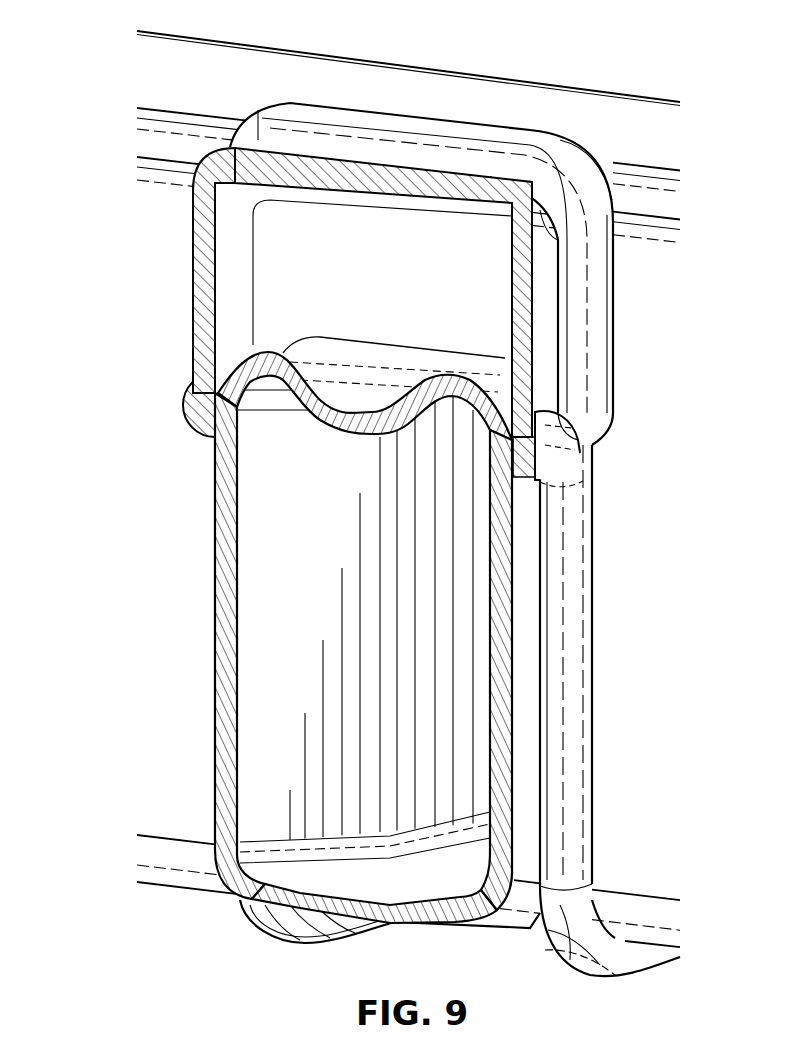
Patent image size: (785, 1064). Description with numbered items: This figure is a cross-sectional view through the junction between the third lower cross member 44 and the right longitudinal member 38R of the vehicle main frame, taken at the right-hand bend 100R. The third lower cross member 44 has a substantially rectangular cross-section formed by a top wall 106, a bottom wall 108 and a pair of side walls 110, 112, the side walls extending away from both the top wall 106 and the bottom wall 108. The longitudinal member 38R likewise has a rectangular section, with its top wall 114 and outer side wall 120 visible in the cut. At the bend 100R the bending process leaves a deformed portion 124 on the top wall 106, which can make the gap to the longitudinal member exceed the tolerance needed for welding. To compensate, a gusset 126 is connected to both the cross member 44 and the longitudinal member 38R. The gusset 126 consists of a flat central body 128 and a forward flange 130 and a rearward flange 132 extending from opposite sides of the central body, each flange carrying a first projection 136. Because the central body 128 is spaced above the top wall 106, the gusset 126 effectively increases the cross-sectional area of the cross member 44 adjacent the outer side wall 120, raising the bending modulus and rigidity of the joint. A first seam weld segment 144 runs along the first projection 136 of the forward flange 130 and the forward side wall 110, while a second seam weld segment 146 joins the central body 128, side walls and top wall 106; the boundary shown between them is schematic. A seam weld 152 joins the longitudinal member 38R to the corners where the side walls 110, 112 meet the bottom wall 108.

The longitudinal member 38R is at (473, 75).
The top wall 114 is at (608, 122).
The central body 128 is at (373, 188).
The forward flange 130 is at (550, 347).
The rearward flange 132 is at (193, 270).
The gusset 126 is at (310, 292).
The first projection 136 is at (193, 365).
The second seam weld segment 146 is at (198, 430).
The first seam weld segment 144 is at (560, 453).
The top wall 106 is at (268, 350).
The deformed portion 124 is at (333, 430).
The outer side wall 120 is at (150, 565).
The rearward side wall 112 is at (235, 610).
The third lower cross member 44 is at (280, 688).
The bend 100R is at (363, 688).
The bottom wall 108 is at (433, 923).
The forward side wall 110 is at (532, 697).
The seam weld 152 is at (593, 617).